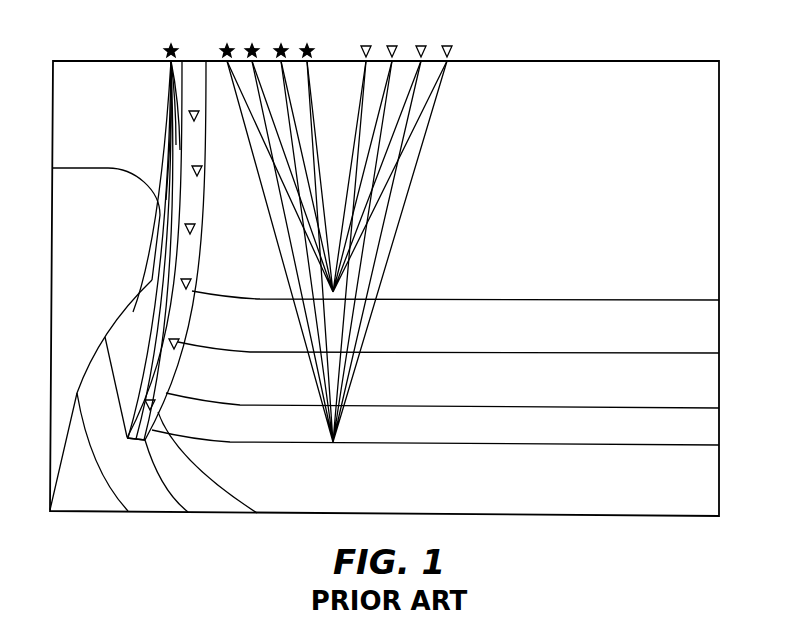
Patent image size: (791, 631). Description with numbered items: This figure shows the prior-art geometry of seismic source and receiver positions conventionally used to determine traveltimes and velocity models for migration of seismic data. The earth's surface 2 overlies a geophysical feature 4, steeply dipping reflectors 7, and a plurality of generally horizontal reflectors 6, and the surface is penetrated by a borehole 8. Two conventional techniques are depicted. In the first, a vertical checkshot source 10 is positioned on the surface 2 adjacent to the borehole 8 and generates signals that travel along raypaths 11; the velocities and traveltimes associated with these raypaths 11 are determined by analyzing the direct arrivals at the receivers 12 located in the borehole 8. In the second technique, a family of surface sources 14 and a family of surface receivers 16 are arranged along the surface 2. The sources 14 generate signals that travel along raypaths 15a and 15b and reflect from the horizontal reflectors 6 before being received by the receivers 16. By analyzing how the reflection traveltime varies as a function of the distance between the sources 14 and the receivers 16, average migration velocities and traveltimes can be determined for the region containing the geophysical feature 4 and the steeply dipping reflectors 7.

The earth's surface 2 is at (693, 61).
The geophysical feature 4 is at (53, 208).
The generally horizontal reflectors 6 is at (700, 302).
The steeply dipping reflectors 7 is at (127, 496).
The borehole 8 is at (137, 442).
The vertical checkshot source 10 is at (169, 42).
The raypaths 11 is at (168, 118).
The receivers 12 is at (207, 120).
The surface sources 14 is at (217, 42).
The raypaths 15a is at (427, 147).
The raypaths 15b is at (347, 310).
The surface receivers 16 is at (355, 42).